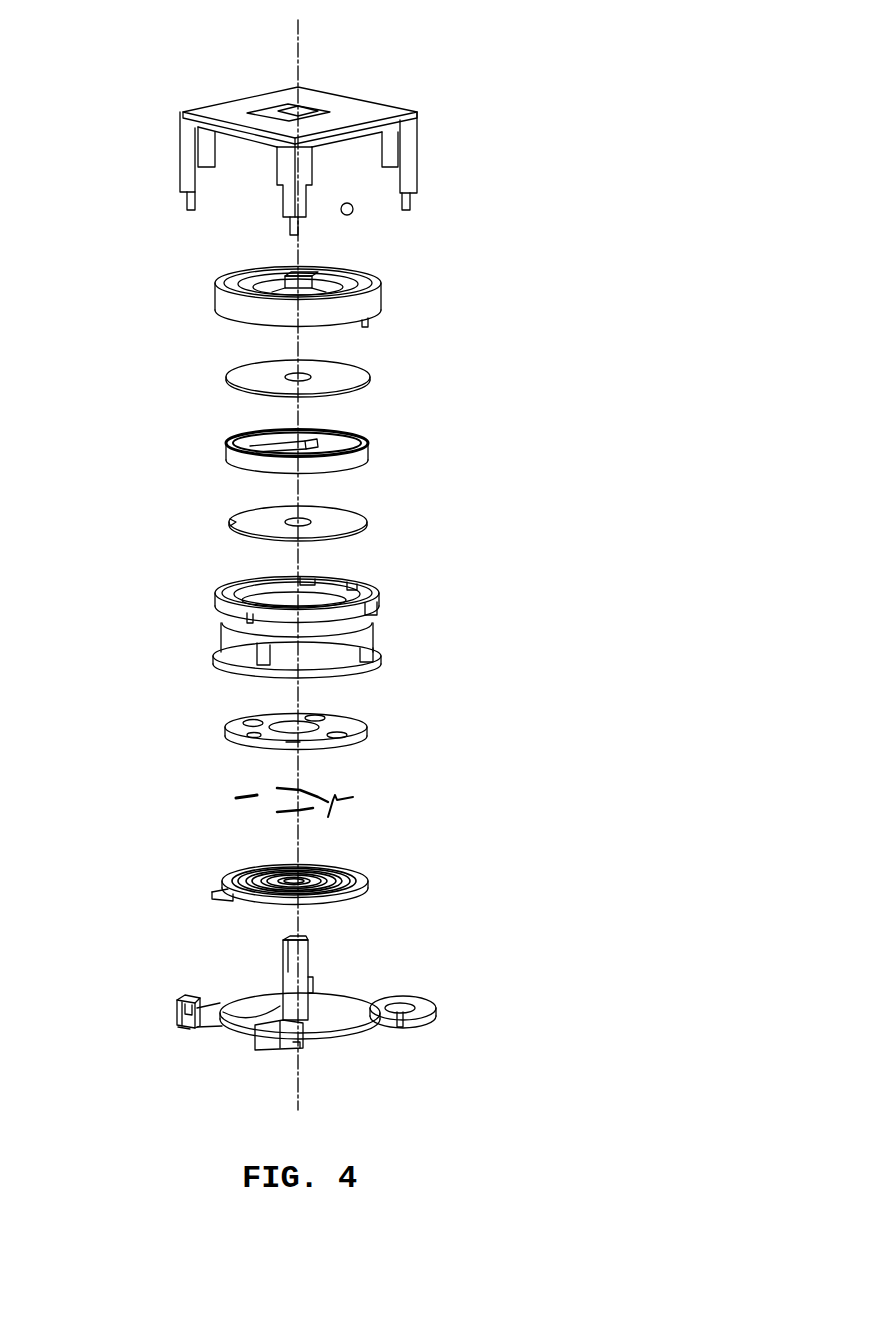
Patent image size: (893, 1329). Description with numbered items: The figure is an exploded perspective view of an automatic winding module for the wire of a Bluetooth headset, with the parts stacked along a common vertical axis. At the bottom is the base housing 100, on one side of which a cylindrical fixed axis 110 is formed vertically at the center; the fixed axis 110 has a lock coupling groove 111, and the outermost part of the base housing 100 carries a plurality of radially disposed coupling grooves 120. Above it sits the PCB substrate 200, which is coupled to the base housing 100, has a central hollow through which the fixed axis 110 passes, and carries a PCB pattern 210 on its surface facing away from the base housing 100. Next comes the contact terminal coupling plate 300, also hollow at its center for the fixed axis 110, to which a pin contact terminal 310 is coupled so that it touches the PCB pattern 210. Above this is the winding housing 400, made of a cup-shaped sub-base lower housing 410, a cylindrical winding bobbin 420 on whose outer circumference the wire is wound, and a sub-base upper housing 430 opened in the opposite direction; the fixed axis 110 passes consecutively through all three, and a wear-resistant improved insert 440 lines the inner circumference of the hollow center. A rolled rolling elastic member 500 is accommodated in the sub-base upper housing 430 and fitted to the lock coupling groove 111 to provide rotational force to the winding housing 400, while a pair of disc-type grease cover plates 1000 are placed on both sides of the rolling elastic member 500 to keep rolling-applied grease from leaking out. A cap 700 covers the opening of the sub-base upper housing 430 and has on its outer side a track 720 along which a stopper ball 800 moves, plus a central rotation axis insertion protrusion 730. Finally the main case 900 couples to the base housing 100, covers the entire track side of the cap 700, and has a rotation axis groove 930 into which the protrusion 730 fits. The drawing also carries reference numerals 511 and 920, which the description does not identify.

The base housing 100 is at (267, 1013).
The fixed axis 110 is at (293, 998).
The lock coupling groove 111 is at (283, 942).
The coupling grooves 120 is at (177, 1010).
The PCB substrate 200 is at (282, 862).
The PCB pattern 210 is at (367, 880).
The contact terminal coupling plate 300 is at (360, 723).
The pin contact terminal 310 is at (353, 798).
The winding housing 400 is at (277, 600).
The sub-base lower housing 410 is at (220, 650).
The winding bobbin 420 is at (228, 628).
The sub-base upper housing 430 is at (306, 572).
The wear-resistant improved insert 440 is at (362, 582).
The rolling elastic member 500 is at (311, 432).
The protrusion 511 is at (297, 443).
The cap 700 is at (332, 266).
The track 720 is at (350, 268).
The rotation axis insertion protrusion 730 is at (300, 273).
The stopper ball 800 is at (353, 208).
The main case 900 is at (395, 110).
The leg 920 is at (187, 200).
The rotation axis groove 930 is at (298, 110).
The grease cover plates 1000 is at (363, 373).